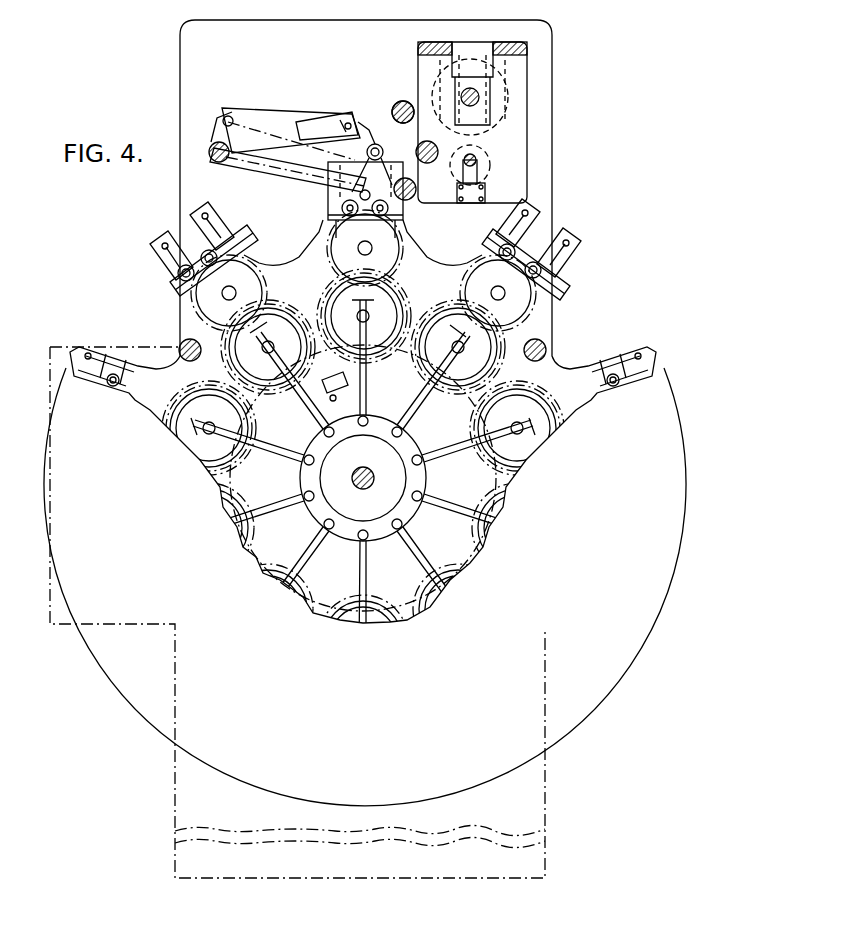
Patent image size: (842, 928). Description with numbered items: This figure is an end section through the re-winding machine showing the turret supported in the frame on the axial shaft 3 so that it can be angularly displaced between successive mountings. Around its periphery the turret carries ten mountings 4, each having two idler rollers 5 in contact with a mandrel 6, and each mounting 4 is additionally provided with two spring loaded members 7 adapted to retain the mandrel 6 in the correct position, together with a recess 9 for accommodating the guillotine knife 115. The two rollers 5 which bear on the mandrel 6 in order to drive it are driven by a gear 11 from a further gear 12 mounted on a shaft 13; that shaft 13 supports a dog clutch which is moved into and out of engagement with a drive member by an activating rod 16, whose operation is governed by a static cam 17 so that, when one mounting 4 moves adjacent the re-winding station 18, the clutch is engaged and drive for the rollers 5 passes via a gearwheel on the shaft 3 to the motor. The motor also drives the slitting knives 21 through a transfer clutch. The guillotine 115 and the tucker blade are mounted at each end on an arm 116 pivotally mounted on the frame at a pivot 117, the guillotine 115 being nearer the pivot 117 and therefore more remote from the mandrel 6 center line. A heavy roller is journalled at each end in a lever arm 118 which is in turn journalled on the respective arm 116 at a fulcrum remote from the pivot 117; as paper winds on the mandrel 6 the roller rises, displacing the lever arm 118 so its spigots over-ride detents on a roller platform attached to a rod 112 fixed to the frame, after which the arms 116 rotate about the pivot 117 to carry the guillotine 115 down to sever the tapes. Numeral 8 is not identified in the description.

The axial shaft 3 is at (363, 478).
The mounting 4 is at (570, 236).
The idler roller 5 is at (538, 288).
The mandrel 6 is at (538, 242).
The spring loaded member 7 is at (504, 222).
The pivot pin 8 is at (524, 242).
The recess 9 is at (532, 244).
The gear 11 is at (403, 243).
The further gear 12 is at (392, 286).
The shaft 13 is at (271, 342).
The activating rod 16 is at (367, 388).
The static cam 17 is at (368, 416).
The re-winding station 18 is at (372, 115).
The slitting knife 21 is at (510, 97).
The rod 112 is at (400, 110).
The guillotine knife 115 is at (312, 126).
The arm 116 is at (300, 122).
The pivot 117 is at (222, 158).
The lever arm 118 is at (312, 160).